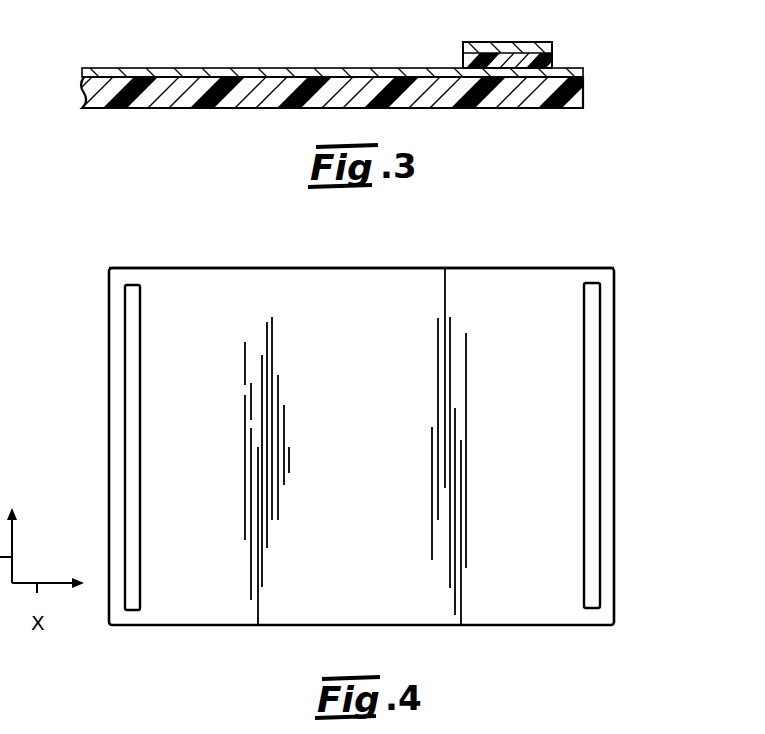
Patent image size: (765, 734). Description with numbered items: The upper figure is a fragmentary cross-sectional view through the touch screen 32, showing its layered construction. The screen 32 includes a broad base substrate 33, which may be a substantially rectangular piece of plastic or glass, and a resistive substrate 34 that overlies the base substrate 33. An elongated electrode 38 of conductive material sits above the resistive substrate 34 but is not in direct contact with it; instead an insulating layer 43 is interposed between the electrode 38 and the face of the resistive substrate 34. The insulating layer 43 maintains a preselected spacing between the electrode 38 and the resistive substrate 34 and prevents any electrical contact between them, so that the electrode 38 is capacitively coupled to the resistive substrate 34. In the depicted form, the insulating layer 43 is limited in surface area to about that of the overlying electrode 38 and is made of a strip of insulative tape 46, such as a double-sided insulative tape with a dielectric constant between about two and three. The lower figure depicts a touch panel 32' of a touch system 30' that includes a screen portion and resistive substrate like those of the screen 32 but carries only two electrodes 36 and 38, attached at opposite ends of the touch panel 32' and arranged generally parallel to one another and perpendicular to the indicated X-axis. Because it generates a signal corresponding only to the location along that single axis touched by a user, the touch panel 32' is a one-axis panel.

In FIG. 3, the screen 32 is at (332, 130).
In FIG. 3, the base substrate 33 is at (583, 90).
In FIG. 3, the resistive substrate 34 is at (583, 72).
In FIG. 3, the electrode 38 is at (512, 42).
In FIG. 4, the electrode 38 is at (592, 406).
In FIG. 3, the insulating layer 43 is at (461, 62).
In FIG. 3, the insulative tape 46 is at (552, 60).
In FIG. 4, the touch system 30' is at (380, 418).
In FIG. 4, the touch panel 32' is at (361, 245).
In FIG. 4, the electrode 36 is at (132, 393).